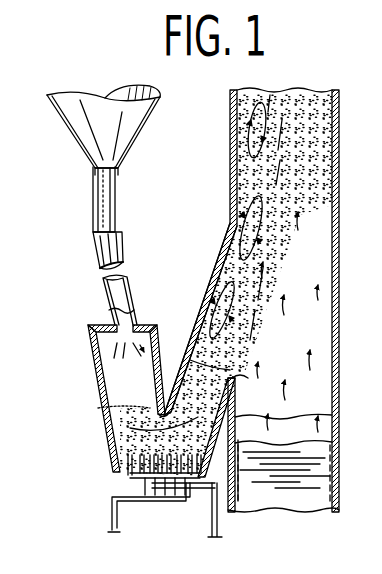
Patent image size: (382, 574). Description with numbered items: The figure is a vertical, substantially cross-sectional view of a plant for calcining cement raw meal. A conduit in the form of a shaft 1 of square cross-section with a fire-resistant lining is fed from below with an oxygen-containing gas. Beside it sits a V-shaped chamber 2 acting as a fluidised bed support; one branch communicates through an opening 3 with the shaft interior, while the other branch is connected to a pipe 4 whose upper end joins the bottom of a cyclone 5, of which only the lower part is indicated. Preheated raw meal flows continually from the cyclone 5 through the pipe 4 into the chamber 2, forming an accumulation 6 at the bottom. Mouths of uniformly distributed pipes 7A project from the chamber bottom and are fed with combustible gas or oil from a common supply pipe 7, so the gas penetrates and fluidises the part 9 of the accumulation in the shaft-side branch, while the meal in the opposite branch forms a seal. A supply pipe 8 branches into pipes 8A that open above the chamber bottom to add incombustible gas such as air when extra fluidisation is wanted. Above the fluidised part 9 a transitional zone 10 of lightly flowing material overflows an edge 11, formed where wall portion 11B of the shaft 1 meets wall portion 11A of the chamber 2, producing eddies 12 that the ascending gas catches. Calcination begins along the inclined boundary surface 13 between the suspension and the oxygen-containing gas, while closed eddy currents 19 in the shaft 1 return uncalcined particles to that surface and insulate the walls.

The shaft 1 is at (339, 152).
The V-shaped chamber 2 is at (88, 354).
The opening 3 is at (242, 318).
The pipe 4 is at (97, 208).
The cyclone 5 is at (90, 115).
The accumulation of preheated raw meal 6 is at (123, 411).
The common supply pipe 7 is at (222, 530).
The pipes 7A is at (208, 495).
The supply pipe 8 is at (110, 516).
The pipes 8A is at (137, 487).
The fluidised part of the accumulation 9 is at (130, 430).
The transitional zone 10 is at (196, 330).
The edge 11 is at (248, 368).
The wall portion of the chamber 11A is at (208, 440).
The wall portion of the shaft 11B is at (334, 414).
The eddies 12 is at (250, 380).
The boundary surface 13 is at (262, 254).
The eddy currents 19 is at (250, 138).